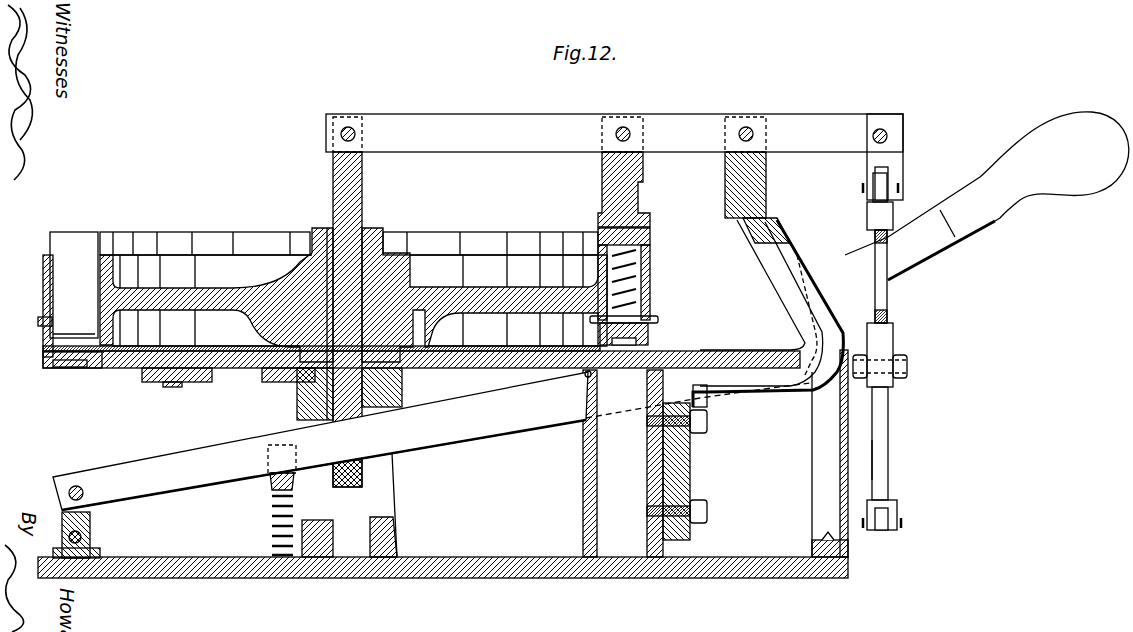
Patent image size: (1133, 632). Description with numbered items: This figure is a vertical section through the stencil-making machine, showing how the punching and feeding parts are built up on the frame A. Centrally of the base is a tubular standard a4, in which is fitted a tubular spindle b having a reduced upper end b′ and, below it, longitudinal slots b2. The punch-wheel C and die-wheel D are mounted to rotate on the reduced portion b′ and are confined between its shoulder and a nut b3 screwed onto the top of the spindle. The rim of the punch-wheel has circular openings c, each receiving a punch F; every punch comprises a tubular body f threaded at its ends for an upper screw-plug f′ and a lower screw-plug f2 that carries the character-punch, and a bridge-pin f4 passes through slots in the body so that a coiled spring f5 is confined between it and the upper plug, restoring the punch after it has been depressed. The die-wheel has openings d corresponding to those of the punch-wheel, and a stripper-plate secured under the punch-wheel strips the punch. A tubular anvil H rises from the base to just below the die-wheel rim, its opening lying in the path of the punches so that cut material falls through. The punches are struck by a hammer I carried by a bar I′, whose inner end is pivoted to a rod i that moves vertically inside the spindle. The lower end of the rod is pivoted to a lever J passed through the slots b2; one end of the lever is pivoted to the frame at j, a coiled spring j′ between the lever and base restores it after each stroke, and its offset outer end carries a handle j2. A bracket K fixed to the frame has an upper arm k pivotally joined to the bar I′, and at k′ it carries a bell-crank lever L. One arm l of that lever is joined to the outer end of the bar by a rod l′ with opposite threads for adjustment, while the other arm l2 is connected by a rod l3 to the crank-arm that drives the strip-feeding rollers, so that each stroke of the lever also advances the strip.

The bar I′ is at (551, 112).
The rod i is at (363, 187).
The reduced upper end of the spindle b′ is at (313, 290).
The nut b3 is at (386, 226).
The punch F is at (50, 246).
The punch-wheel C is at (61, 311).
The circular openings c is at (42, 308).
The tubular body f is at (649, 280).
The upper screw-plug f′ is at (657, 232).
The coiled spring f5 is at (632, 264).
The bridge-pin f4 is at (648, 318).
The lower screw-plug f2 is at (650, 337).
The hammer I is at (601, 187).
The die-wheel D is at (126, 368).
The openings of the die-wheel d is at (582, 372).
The lever J is at (497, 430).
The tubular anvil H is at (584, 455).
The tubular spindle b is at (396, 465).
The longitudinal slots b2 is at (386, 502).
The tubular standard a4 is at (398, 537).
The pivot of the lever j is at (78, 535).
The coiled spring j′ is at (272, 505).
The frame A is at (488, 602).
The upper arm of the bracket k is at (770, 287).
The pivot of the bell-crank lever k′ is at (874, 312).
The bracket K is at (789, 385).
The rod l′ is at (882, 292).
The handle j2 is at (997, 222).
The arm of the bell-crank lever l is at (893, 345).
The bell-crank lever L is at (888, 443).
The other arm of the bell-crank lever l2 is at (886, 460).
The rod l3 is at (883, 527).